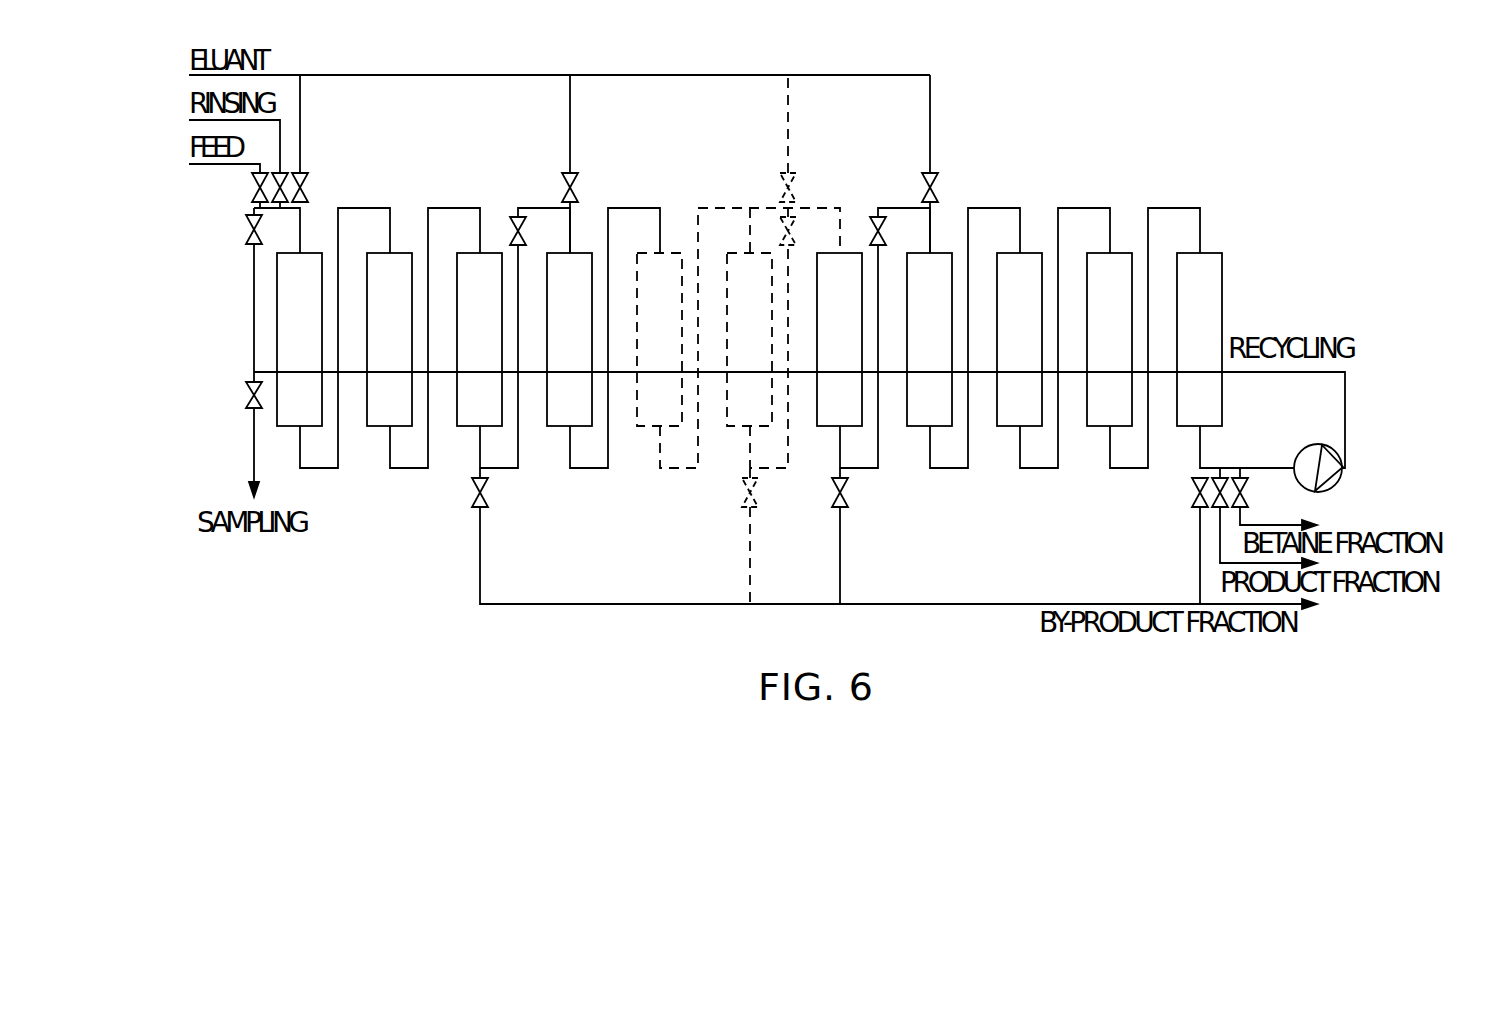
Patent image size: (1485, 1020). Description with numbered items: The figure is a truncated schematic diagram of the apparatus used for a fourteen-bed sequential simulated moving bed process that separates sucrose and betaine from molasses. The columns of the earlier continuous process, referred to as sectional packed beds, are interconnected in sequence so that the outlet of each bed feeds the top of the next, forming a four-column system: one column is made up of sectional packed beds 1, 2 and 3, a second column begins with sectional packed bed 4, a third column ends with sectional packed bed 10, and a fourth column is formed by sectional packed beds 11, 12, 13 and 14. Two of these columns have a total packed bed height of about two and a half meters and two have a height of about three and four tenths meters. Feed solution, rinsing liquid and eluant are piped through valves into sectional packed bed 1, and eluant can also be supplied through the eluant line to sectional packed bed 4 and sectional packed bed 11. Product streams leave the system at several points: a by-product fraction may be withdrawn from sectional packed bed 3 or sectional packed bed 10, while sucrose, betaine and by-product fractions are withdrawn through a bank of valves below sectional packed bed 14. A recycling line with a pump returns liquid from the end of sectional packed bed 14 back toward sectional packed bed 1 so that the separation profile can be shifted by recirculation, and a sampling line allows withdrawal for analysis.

The sectional packed bed 1 is at (309, 358).
The sectional packed bed 2 is at (399, 358).
The sectional packed bed 3 is at (489, 358).
The sectional packed bed 4 is at (579, 358).
The sectional packed bed 10 is at (855, 358).
The sectional packed bed 11 is at (945, 358).
The sectional packed bed 12 is at (1035, 358).
The sectional packed bed 13 is at (1125, 358).
The sectional packed bed 14 is at (1215, 358).